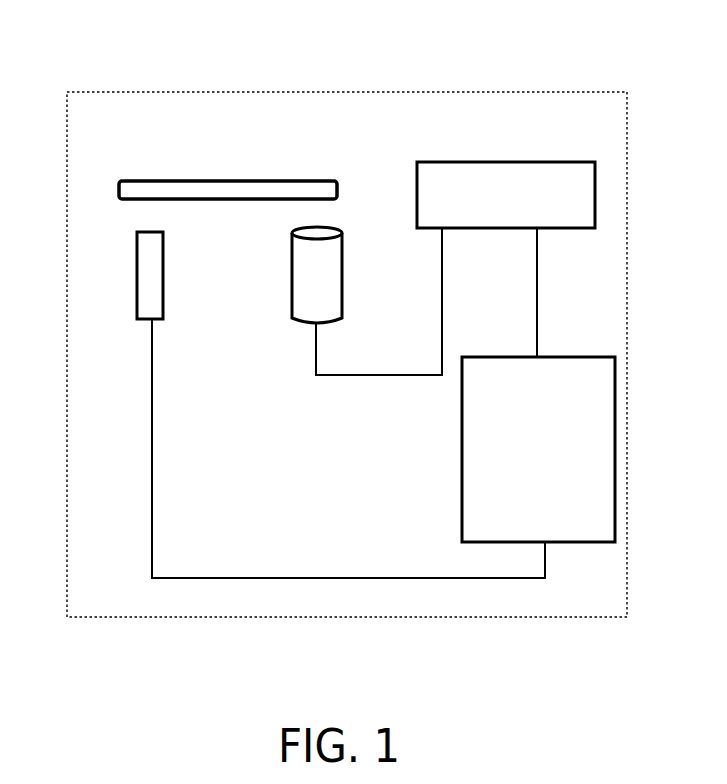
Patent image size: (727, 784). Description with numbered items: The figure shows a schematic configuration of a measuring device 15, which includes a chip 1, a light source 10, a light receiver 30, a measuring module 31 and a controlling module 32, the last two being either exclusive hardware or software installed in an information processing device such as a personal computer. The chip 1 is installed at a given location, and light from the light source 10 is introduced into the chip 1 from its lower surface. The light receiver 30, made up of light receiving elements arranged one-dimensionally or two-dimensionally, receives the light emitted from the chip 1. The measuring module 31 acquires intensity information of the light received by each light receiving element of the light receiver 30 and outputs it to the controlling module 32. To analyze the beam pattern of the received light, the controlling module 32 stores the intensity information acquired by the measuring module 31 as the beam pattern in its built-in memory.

The measuring device 15 is at (549, 81).
The chip 1 is at (322, 172).
The light source 10 is at (136, 275).
The light receiver 30 is at (343, 252).
The measuring module 31 is at (556, 162).
The controlling module 32 is at (566, 357).